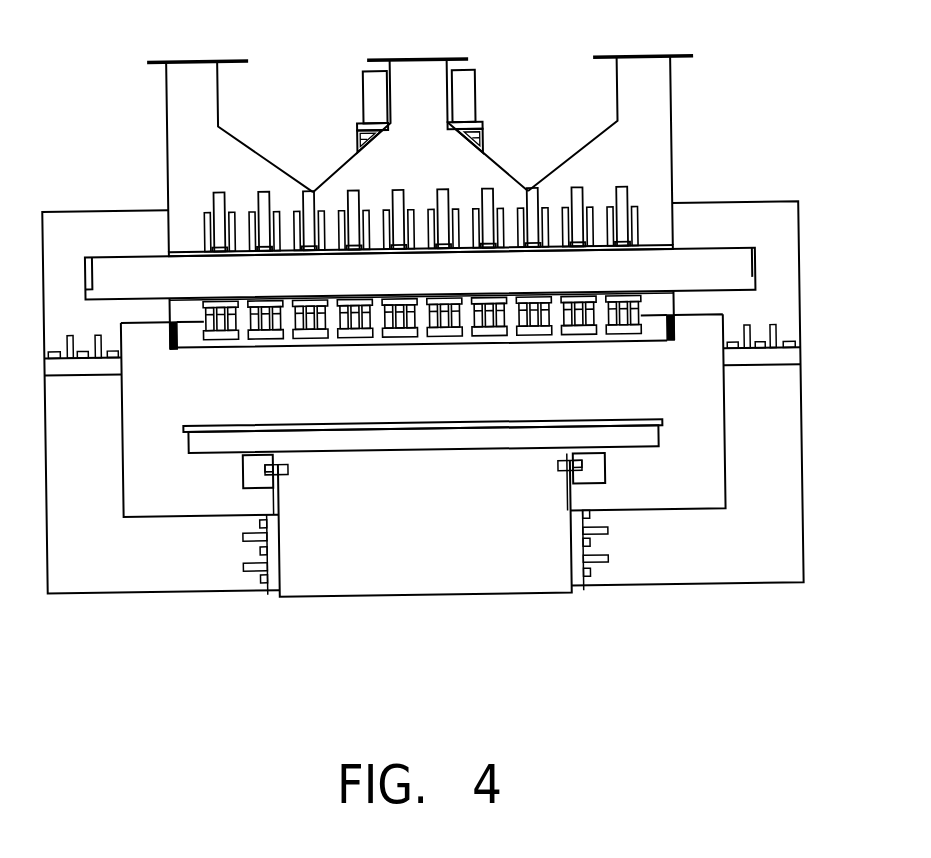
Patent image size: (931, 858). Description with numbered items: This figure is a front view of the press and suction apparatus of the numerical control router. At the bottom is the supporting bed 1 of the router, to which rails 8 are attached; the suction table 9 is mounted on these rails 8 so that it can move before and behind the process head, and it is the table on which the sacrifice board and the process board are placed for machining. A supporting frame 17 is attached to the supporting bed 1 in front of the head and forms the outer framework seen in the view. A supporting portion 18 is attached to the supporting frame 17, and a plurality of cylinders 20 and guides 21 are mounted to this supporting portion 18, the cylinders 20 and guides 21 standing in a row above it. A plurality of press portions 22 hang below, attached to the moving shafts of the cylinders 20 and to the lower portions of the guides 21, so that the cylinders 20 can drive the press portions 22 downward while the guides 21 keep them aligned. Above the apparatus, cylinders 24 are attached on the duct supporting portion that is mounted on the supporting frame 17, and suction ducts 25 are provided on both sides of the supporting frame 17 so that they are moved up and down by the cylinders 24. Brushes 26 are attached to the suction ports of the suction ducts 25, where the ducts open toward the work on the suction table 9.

The supporting bed 1 is at (432, 580).
The rails 8 is at (280, 473).
The suction table 9 is at (492, 438).
The supporting frame 17 is at (105, 580).
The supporting portion 18 is at (737, 268).
The cylinders 20 is at (213, 195).
The guides 21 is at (207, 227).
The press portions 22 is at (320, 338).
The cylinders 24 is at (465, 93).
The suction ducts 25 is at (187, 73).
The brushes 26 is at (177, 350).